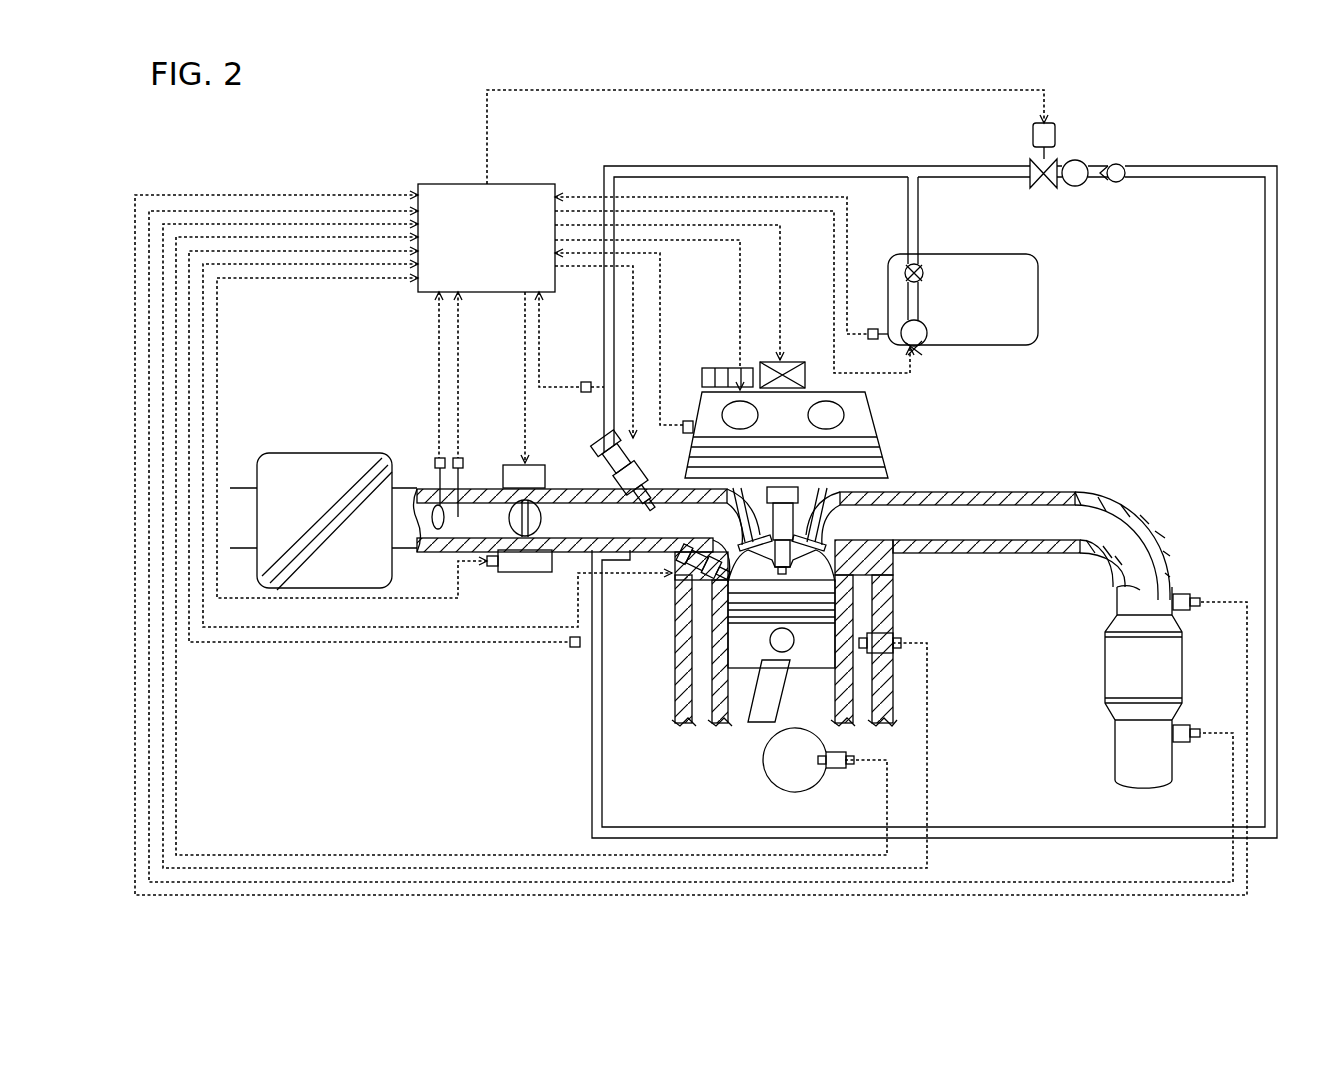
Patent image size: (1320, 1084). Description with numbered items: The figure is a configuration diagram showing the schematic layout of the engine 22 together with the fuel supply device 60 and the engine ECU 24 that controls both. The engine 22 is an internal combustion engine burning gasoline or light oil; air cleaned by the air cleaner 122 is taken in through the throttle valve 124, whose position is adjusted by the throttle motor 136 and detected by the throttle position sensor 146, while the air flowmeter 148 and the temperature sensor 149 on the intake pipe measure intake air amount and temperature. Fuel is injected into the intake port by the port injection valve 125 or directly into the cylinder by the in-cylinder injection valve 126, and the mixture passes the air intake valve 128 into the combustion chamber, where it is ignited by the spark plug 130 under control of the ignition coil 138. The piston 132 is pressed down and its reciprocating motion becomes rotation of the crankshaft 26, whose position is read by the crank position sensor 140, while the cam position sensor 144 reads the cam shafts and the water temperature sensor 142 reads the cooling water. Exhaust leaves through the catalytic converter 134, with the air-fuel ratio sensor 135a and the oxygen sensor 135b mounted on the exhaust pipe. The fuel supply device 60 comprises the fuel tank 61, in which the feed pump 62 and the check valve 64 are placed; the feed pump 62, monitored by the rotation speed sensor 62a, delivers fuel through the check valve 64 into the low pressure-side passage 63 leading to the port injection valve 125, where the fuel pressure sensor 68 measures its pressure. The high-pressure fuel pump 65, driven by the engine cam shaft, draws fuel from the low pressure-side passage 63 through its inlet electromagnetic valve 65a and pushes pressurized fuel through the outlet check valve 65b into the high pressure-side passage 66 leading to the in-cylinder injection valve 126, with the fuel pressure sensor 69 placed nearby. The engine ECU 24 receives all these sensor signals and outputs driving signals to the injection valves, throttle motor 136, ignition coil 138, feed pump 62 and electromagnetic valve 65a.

The engine 22 is at (906, 430).
The engine ECU 24 is at (511, 183).
The crankshaft 26 is at (750, 758).
The fuel supply device 60 is at (1238, 95).
The fuel tank 61 is at (985, 254).
The feed pump 62 is at (930, 338).
The rotation speed sensor 62a is at (872, 327).
The low pressure-side passage 63 is at (940, 165).
The check valve 64 is at (919, 262).
The high-pressure fuel pump 65 is at (1079, 187).
The electromagnetic valve 65a is at (1041, 190).
The check valve 65b is at (1118, 162).
The high pressure-side passage 66 is at (1176, 165).
The fuel pressure sensor 68 is at (584, 381).
The fuel pressure sensor 69 is at (574, 649).
The air cleaner 122 is at (327, 452).
The throttle valve 124 is at (555, 500).
The port injection valve 125 is at (600, 433).
The in-cylinder injection valve 126 is at (688, 583).
The air intake valve 128 is at (745, 540).
The spark plug 130 is at (800, 530).
The piston 132 is at (743, 640).
The catalytic converter 134 is at (1103, 660).
The air-fuel ratio sensor 135a is at (1183, 592).
The oxygen sensor 135b is at (1182, 744).
The throttle motor 136 is at (515, 463).
The ignition coil 138 is at (797, 361).
The crank position sensor 140 is at (833, 770).
The water temperature sensor 142 is at (893, 632).
The cam position sensor 144 is at (686, 420).
The throttle position sensor 146 is at (527, 573).
The air flowmeter 148 is at (435, 461).
The temperature sensor 149 is at (480, 447).